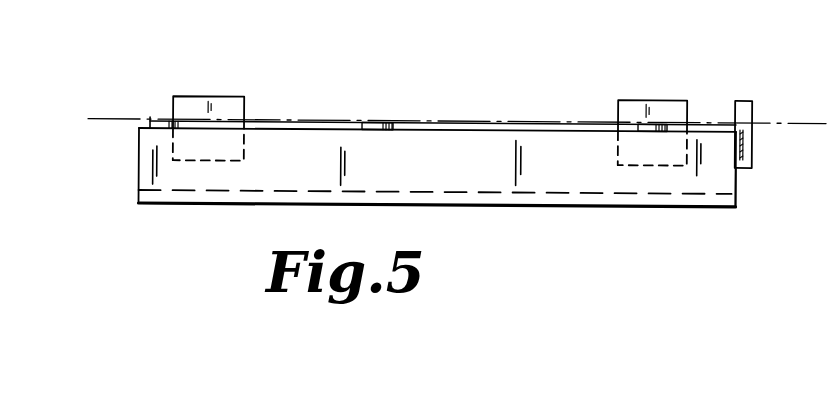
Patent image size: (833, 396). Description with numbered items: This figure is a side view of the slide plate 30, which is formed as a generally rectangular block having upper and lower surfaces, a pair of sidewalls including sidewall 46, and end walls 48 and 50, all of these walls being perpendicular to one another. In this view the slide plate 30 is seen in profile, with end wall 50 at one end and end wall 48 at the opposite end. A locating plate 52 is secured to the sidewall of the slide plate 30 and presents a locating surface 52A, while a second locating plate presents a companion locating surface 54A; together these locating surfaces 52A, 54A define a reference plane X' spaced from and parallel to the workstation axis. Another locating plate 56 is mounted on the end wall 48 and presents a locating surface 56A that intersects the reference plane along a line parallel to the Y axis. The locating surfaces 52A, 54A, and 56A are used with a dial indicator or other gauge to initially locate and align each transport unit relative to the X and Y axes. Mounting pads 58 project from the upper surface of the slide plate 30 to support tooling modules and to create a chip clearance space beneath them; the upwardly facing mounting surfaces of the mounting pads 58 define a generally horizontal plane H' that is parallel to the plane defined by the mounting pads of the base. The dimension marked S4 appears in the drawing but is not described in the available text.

The slide plate 30 is at (246, 68).
The sidewall 46 is at (447, 169).
The end wall 48 is at (736, 185).
The end wall 50 is at (139, 164).
The locating plate 52 is at (635, 97).
The locating surface 52A is at (625, 112).
The locating surface 54A is at (237, 105).
The locating plate 56 is at (752, 103).
The locating surface 56A is at (735, 111).
The mounting pad 58 is at (386, 120).
The dimension S4 is at (197, 96).
The horizontal plane H' is at (360, 89).